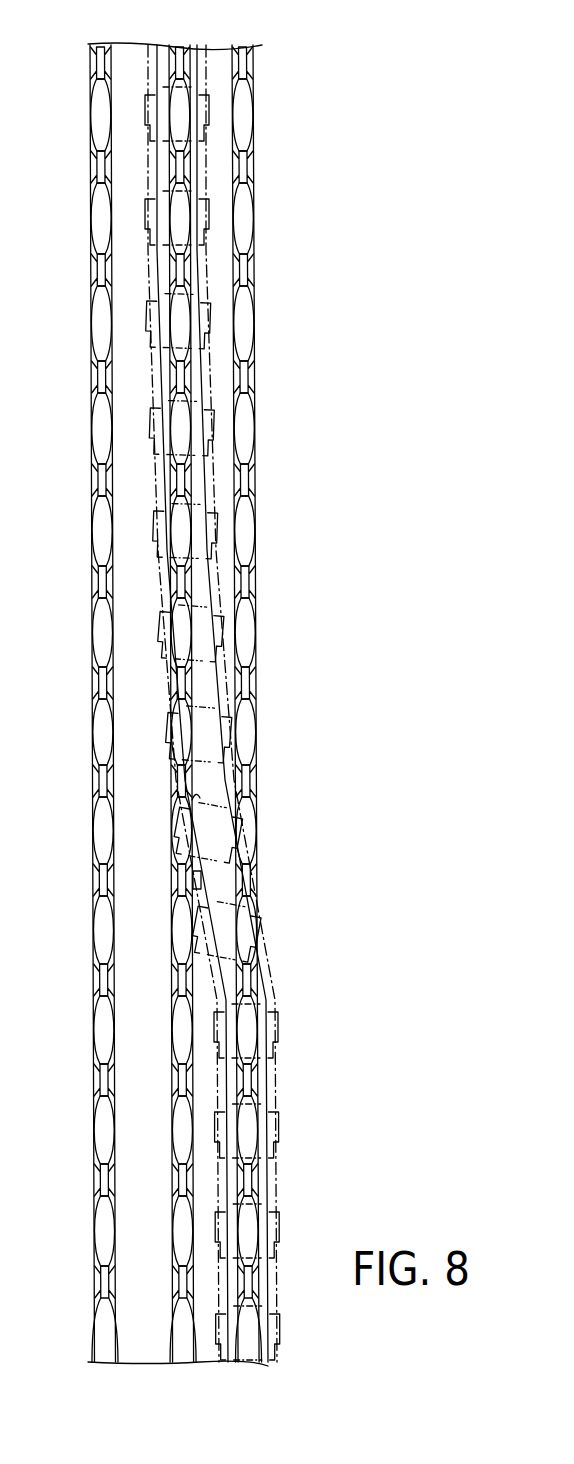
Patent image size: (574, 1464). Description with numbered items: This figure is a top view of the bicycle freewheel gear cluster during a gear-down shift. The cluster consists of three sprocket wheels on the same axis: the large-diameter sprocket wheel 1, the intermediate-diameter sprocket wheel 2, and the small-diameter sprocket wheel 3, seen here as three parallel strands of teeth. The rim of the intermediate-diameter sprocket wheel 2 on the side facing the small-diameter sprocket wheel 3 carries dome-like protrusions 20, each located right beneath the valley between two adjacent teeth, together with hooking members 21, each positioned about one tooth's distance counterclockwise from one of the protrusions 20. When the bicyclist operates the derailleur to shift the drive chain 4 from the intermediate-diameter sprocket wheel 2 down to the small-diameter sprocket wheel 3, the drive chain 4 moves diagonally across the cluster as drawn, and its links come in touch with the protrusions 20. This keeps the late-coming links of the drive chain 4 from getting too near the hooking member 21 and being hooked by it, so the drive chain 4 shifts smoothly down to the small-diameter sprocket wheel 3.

The large-diameter sprocket wheel 1 is at (100, 108).
The intermediate-diameter sprocket wheel 2 is at (180, 47).
The small-diameter sprocket wheel 3 is at (249, 46).
The drive chain 4 is at (205, 90).
The dome-like protrusions 20 is at (193, 798).
The hooking member 21 is at (193, 893).